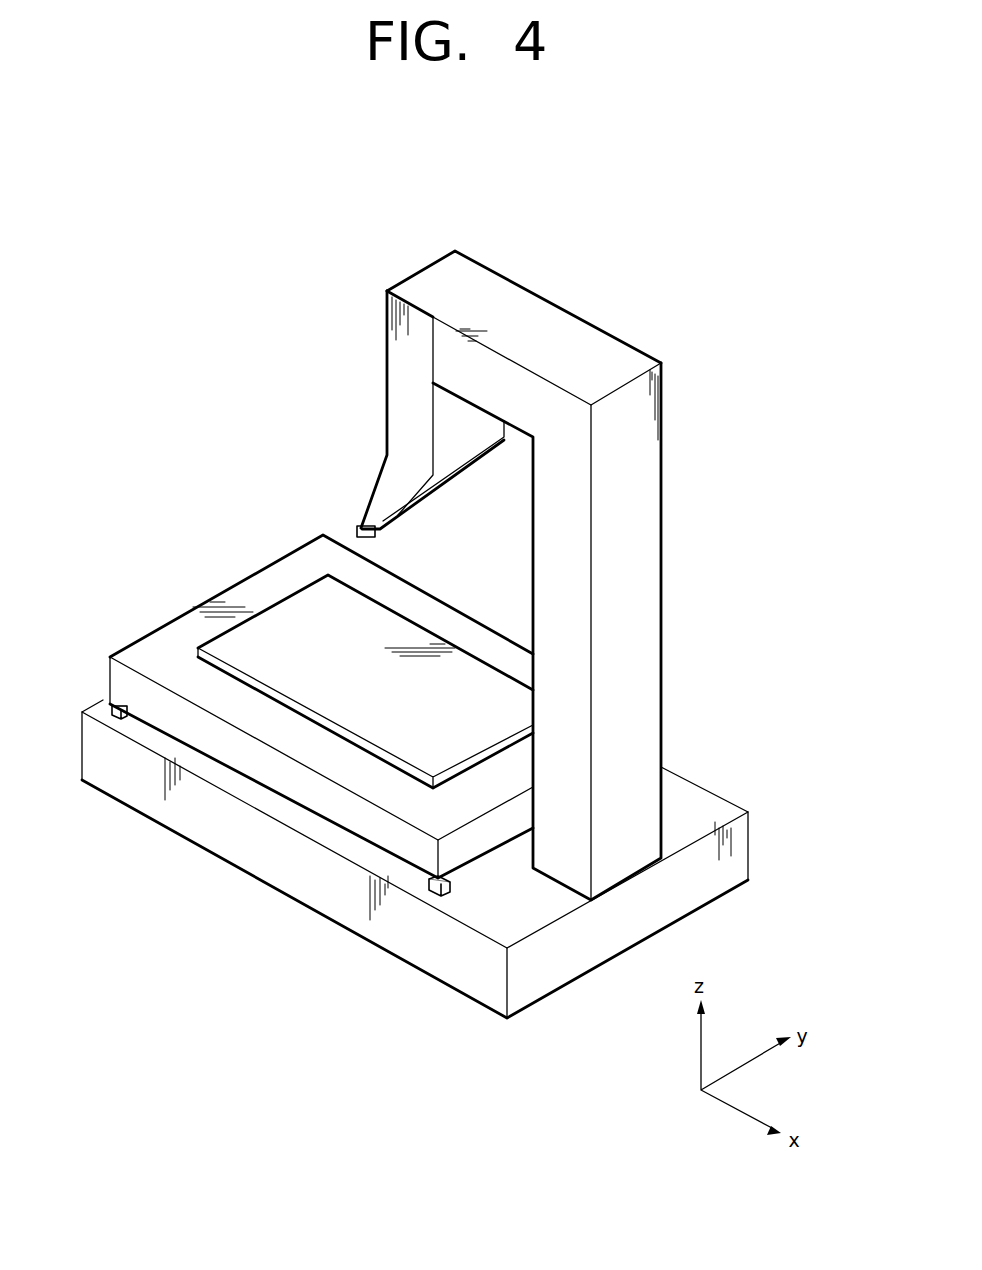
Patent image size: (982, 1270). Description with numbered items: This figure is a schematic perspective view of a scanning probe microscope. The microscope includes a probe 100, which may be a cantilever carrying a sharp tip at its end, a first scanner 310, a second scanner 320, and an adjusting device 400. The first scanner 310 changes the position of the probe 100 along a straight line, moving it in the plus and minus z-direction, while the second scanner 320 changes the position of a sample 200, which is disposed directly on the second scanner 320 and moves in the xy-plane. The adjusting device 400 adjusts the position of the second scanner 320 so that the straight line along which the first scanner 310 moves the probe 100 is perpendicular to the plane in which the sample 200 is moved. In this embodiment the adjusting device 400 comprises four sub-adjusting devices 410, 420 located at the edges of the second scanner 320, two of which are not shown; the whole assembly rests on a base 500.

The probe 100 is at (358, 527).
The sample 200 is at (283, 613).
The first scanner 310 is at (393, 383).
The second scanner 320 is at (145, 648).
The adjusting device 400 is at (142, 915).
The sub-adjusting device 410 is at (113, 718).
The sub-adjusting device 420 is at (440, 887).
The base 500 is at (445, 962).